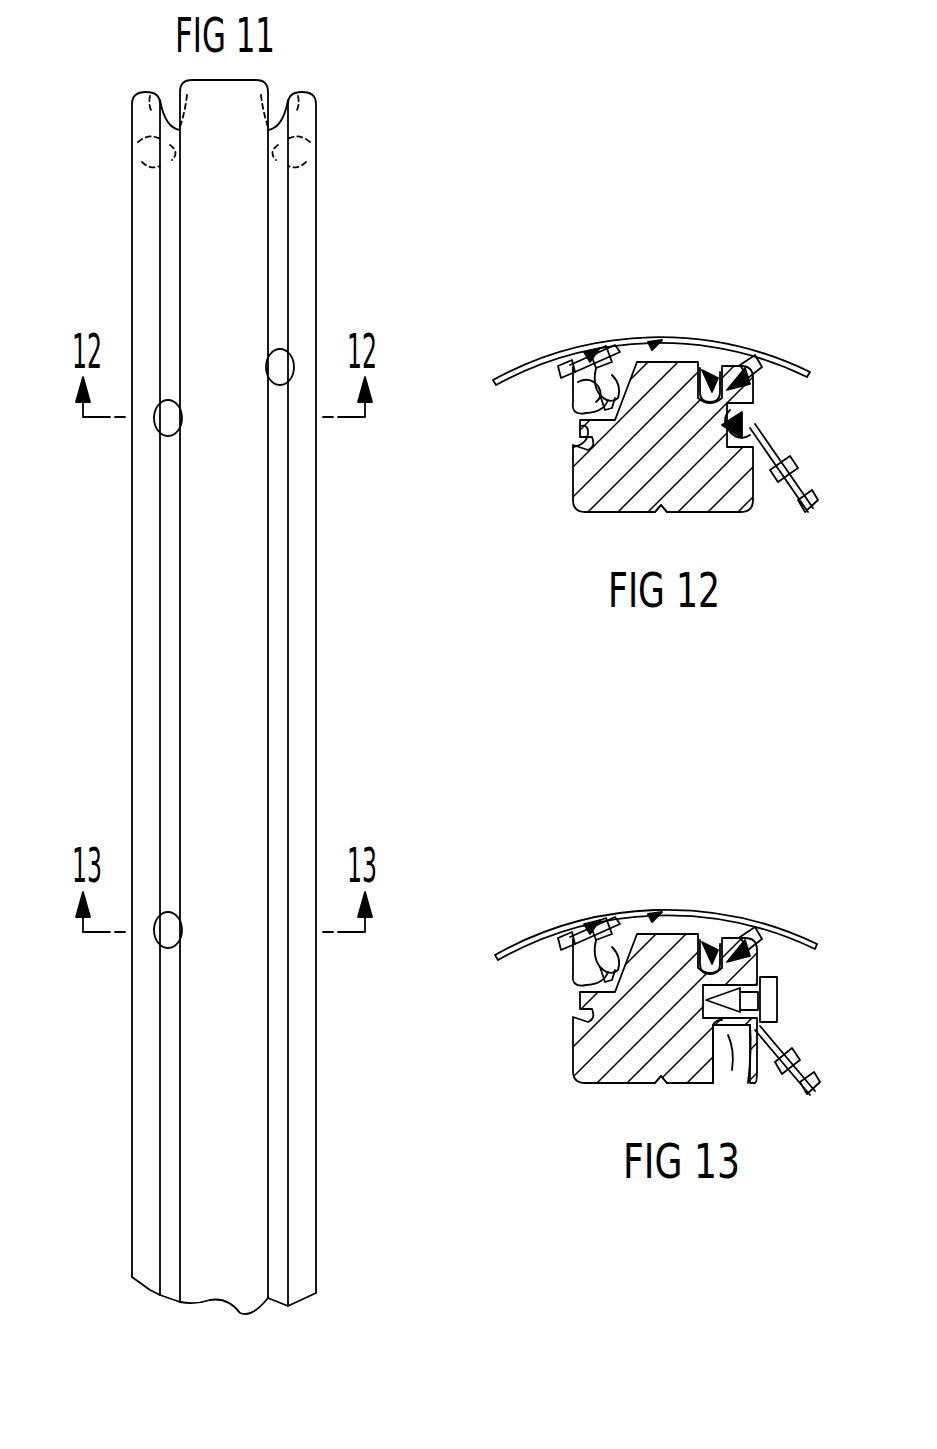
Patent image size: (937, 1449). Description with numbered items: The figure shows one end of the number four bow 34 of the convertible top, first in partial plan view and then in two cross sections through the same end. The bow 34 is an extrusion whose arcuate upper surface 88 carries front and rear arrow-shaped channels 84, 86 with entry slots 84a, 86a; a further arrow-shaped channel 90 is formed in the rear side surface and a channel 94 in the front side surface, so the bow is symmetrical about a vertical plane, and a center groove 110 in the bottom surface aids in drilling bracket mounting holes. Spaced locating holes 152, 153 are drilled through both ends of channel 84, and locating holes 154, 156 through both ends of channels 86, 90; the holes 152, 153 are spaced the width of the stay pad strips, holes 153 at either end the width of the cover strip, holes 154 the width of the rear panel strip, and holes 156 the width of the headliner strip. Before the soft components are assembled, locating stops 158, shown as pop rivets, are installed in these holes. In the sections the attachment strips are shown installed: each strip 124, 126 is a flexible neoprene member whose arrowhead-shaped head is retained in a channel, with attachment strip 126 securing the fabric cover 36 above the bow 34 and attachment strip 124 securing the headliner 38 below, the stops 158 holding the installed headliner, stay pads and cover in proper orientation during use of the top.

In FIG. 11, the #4 bow 34 is at (343, 710).
In FIG. 12, the #4 bow 34 is at (556, 512).
In FIG. 13, the #4 bow 34 is at (554, 1078).
In FIG. 12, the fabric cover 36 is at (510, 376).
In FIG. 13, the fabric cover 36 is at (510, 950).
In FIG. 12, the headliner 38 is at (800, 511).
In FIG. 13, the headliner 38 is at (800, 1075).
In FIG. 11, the front arrow-shaped channel 84 is at (170, 192).
In FIG. 13, the front arrow-shaped channel 84 is at (650, 925).
In FIG. 11, the entry slot 84a is at (158, 224).
In FIG. 11, the rear arrow-shaped channel 86 is at (282, 197).
In FIG. 12, the rear arrow-shaped channel 86 is at (622, 350).
In FIG. 13, the rear arrow-shaped channel 86 is at (765, 945).
In FIG. 11, the entry slot 86a is at (292, 224).
In FIG. 11, the arcuate upper surface 88 is at (228, 620).
In FIG. 13, the arrow-shaped channel 90 is at (735, 1035).
In FIG. 12, the channel 94 is at (578, 437).
In FIG. 12, the center groove 110 is at (665, 515).
In FIG. 13, the center groove 110 is at (665, 1085).
In FIG. 12, the attachment strip 124 is at (730, 352).
In FIG. 13, the attachment strip 124 is at (715, 930).
In FIG. 12, the attachment strip 126 is at (578, 365).
In FIG. 13, the attachment strip 126 is at (585, 940).
In FIG. 11, the locating hole 152 is at (158, 420).
In FIG. 12, the locating hole 152 is at (580, 400).
In FIG. 11, the locating hole 153 is at (158, 938).
In FIG. 13, the locating hole 153 is at (575, 983).
In FIG. 11, the locating hole 154 is at (280, 367).
In FIG. 13, the locating hole 156 is at (713, 1083).
In FIG. 12, the locating stop 158 is at (604, 357).
In FIG. 13, the locating stop 158 is at (607, 935).